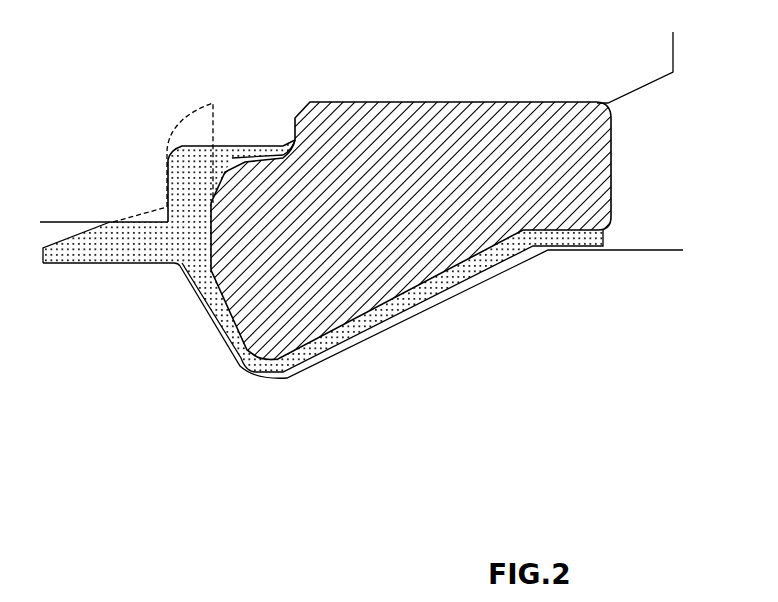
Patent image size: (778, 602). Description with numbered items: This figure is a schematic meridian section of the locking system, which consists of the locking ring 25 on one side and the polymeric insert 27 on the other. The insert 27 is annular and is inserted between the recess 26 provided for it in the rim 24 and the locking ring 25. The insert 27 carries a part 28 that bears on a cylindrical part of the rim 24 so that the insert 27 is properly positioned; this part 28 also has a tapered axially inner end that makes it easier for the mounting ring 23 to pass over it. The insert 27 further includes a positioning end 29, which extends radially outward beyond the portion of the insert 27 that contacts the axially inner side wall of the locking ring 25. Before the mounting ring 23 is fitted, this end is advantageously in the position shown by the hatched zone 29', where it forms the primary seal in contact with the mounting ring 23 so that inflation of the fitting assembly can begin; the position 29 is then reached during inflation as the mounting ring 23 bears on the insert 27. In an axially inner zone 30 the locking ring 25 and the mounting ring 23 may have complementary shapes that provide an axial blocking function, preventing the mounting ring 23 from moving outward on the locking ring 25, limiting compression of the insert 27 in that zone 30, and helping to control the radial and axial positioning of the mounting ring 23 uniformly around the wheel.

The mounting ring 23 is at (60, 222).
The rim 24 is at (640, 262).
The locking ring 25 is at (403, 102).
The recess 26 is at (263, 389).
The polymeric insert 27 is at (423, 303).
The part of the insert 28 is at (105, 263).
The positioning end 29 is at (231, 132).
The position of the positioning end before fitting 29' is at (163, 148).
The axially inner zone 30 is at (267, 130).